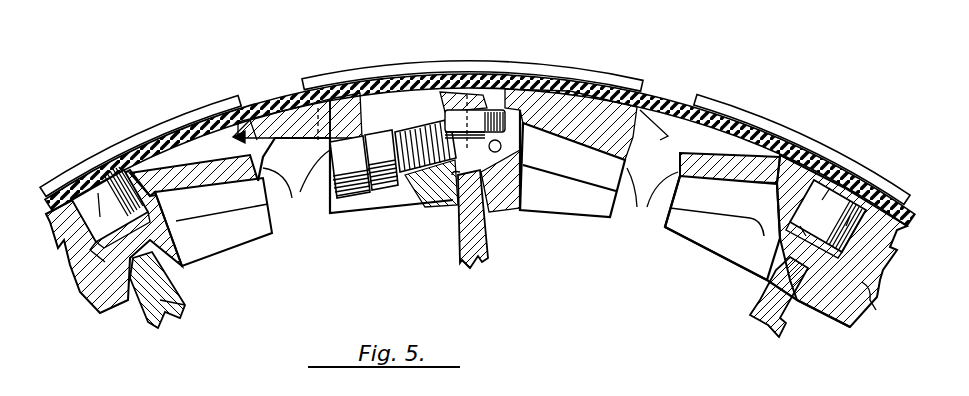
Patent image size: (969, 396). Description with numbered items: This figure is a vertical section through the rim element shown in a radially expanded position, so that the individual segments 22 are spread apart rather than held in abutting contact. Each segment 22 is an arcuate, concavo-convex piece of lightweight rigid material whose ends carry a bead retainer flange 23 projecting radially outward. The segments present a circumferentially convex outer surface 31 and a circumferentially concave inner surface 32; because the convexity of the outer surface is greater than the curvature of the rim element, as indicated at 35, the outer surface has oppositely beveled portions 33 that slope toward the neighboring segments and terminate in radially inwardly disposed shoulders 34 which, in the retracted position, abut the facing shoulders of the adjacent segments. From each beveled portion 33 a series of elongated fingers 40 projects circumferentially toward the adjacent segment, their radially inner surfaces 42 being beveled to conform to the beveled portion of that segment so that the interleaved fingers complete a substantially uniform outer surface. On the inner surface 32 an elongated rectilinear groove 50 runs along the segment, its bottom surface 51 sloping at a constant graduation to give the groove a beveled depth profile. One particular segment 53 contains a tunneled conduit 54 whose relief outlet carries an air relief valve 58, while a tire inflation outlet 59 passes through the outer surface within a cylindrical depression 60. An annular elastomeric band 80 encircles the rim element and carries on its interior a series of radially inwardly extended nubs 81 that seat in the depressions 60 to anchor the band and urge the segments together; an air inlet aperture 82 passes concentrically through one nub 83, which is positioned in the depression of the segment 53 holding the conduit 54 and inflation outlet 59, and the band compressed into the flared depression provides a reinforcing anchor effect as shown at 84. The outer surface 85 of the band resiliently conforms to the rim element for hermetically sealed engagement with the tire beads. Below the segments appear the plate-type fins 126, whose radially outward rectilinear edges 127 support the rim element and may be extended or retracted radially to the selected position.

The segment 22 is at (187, 108).
The bead retainer flange 23 is at (134, 139).
The outer surface 31 is at (790, 180).
The inner surface 32 is at (393, 213).
The beveled portion 33 is at (214, 155).
The shoulder 34 is at (637, 212).
The degree of convexity 35 is at (283, 118).
The finger 40 is at (262, 112).
The radially inner surface 42 is at (255, 137).
The groove 50 is at (140, 287).
The bottom surface 51 is at (173, 297).
The segment 53 is at (585, 57).
The tunneled conduit 54 is at (521, 181).
The air relief valve 58 is at (357, 192).
The tire inflation outlet 59 is at (456, 110).
The cylindrical depression 60 is at (74, 272).
The elastomeric band 80 is at (323, 112).
The nub 81 is at (90, 178).
The air inlet aperture 82 is at (478, 95).
The nub 83 is at (522, 132).
The reinforcing anchor 84 is at (445, 100).
The outer surface 85 is at (360, 130).
The fin 126 is at (173, 318).
The rectilinear edge 127 is at (98, 290).